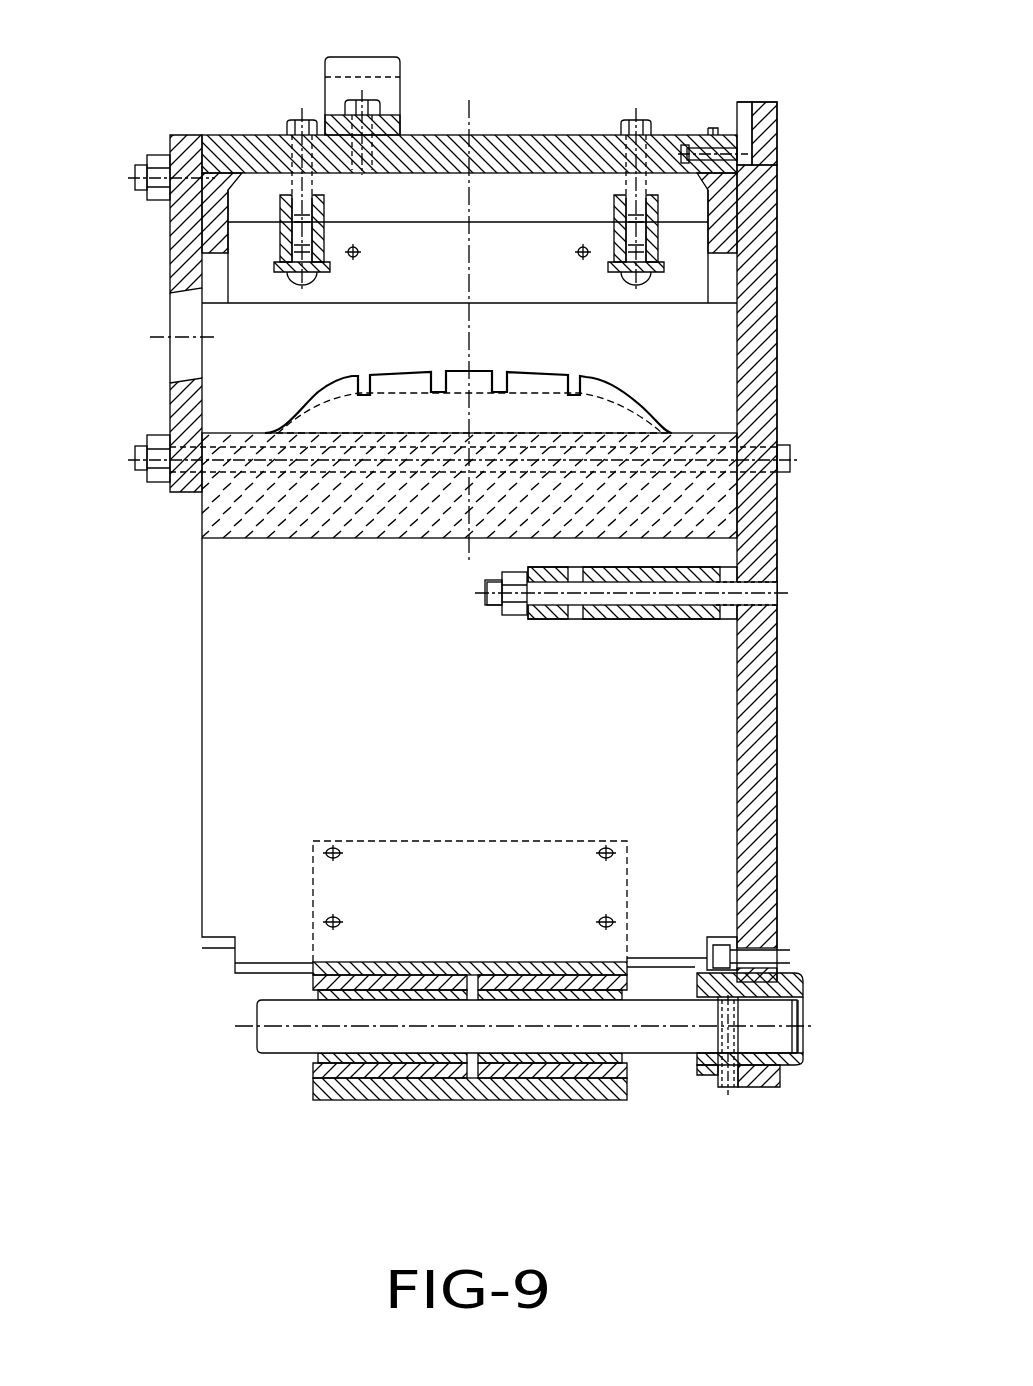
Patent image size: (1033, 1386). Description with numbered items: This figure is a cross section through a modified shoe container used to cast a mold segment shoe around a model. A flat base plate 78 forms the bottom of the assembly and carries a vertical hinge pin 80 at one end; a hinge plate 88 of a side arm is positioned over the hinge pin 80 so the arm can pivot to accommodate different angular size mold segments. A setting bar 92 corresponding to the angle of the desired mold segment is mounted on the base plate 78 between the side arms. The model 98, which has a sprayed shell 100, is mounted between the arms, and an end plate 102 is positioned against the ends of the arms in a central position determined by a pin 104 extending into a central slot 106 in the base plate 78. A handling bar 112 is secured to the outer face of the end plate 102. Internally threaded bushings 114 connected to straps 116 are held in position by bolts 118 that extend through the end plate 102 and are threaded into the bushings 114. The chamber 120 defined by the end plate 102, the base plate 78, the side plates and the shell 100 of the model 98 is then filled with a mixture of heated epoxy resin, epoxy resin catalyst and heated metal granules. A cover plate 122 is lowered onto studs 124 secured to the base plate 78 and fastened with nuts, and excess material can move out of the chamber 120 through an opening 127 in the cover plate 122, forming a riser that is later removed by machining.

The base plate 78 is at (765, 785).
The hinge pin 80 is at (657, 1042).
The hinge plate 88 is at (415, 838).
The setting bar 92 is at (637, 622).
The model 98 is at (720, 498).
The sprayed shell 100 is at (640, 395).
The end plate 102 is at (512, 142).
The pin 104 is at (745, 142).
The central slot 106 is at (745, 108).
The handling bar 112 is at (362, 62).
The internally threaded bushing 114 is at (318, 206).
The strap 116 is at (328, 265).
The bolt 118 is at (297, 128).
The chamber 120 is at (697, 337).
The cover plate 122 is at (185, 259).
The stud 124 is at (147, 172).
The opening 127 is at (190, 383).